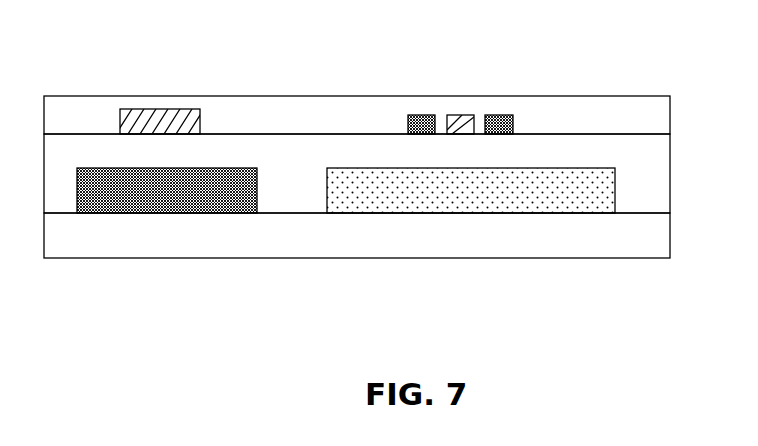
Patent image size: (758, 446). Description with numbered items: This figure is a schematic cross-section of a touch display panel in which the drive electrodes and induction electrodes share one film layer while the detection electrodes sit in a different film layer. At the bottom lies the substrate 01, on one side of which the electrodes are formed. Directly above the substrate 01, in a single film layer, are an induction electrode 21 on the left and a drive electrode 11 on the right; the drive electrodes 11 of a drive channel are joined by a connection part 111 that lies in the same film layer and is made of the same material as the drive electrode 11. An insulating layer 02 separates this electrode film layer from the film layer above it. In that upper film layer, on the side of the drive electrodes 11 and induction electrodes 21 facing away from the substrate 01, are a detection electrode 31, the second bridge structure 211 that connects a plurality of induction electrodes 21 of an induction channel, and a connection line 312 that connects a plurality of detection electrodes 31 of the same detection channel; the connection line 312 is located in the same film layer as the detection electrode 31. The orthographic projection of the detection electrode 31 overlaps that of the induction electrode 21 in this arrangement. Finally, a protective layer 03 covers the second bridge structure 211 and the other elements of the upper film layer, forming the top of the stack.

The substrate 01 is at (671, 233).
The insulating layer 02 is at (658, 157).
The protective layer 03 is at (658, 122).
The drive electrode 11 is at (369, 188).
The connection part 111 is at (466, 188).
The induction electrode 21 is at (158, 188).
The second bridge structure 211 is at (410, 118).
The detection electrode 31 is at (155, 112).
The connection line 312 is at (456, 118).